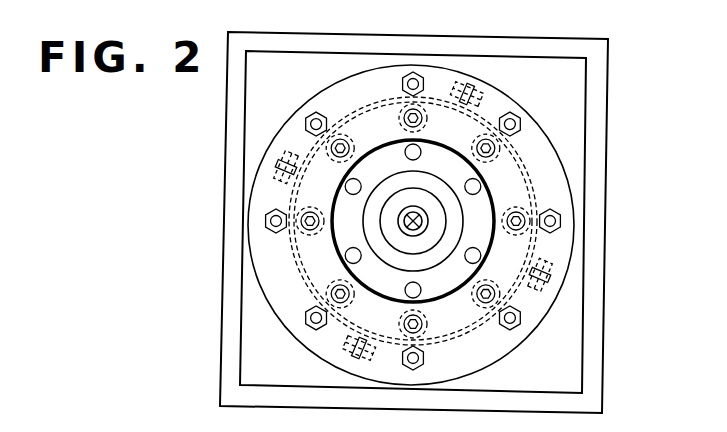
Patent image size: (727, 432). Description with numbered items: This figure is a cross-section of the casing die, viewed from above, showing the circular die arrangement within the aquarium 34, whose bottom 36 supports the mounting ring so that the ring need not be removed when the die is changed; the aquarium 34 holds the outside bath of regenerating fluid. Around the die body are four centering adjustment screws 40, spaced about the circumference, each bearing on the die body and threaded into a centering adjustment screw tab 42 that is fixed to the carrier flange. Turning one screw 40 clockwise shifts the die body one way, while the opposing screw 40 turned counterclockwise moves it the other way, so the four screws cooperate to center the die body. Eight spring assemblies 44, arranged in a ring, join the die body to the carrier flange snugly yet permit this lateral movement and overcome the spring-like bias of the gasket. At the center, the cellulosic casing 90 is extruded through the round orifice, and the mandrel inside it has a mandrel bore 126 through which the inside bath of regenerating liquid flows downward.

The aquarium 34 is at (233, 268).
The bottom 36 is at (555, 369).
The centering adjustment screw 40 is at (478, 84).
The centering adjustment screw tab 42 is at (472, 101).
The spring assembly 44 is at (352, 117).
The cellulosic casing 90 is at (416, 216).
The mandrel bore 126 is at (495, 239).